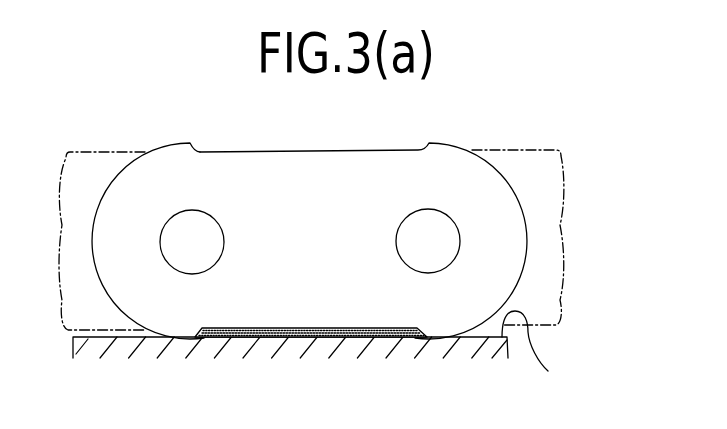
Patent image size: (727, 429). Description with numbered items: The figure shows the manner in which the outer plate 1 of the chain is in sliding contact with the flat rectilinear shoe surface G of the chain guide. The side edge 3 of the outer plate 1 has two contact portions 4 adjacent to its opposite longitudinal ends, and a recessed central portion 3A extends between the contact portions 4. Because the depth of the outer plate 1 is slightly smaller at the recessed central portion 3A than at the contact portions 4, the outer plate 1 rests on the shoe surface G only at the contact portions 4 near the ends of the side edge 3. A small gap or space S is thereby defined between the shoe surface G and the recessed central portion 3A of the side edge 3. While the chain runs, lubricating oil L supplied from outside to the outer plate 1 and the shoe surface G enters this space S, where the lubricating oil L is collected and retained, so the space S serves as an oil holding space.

The outer plate 1 is at (313, 147).
The side edge 3 is at (302, 322).
The recessed central portion 3A is at (197, 363).
The contact portion 4 is at (178, 338).
The lubricating oil L is at (240, 328).
The oil holding space S is at (275, 343).
The shoe surface G is at (534, 349).